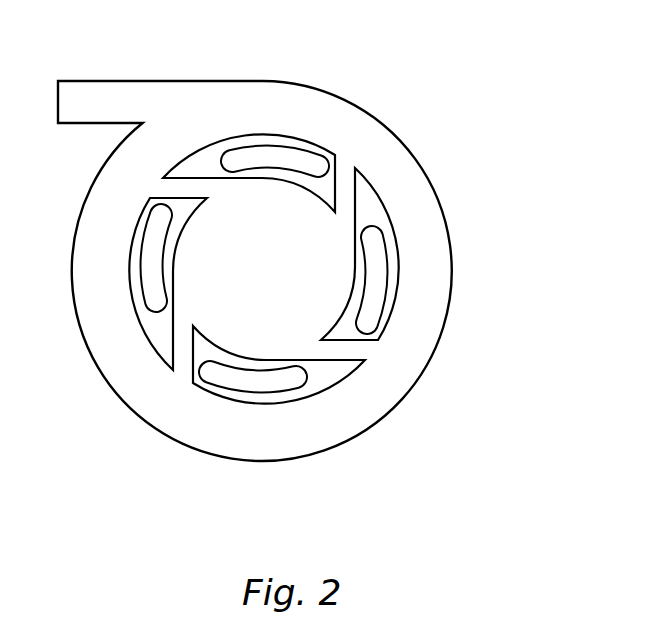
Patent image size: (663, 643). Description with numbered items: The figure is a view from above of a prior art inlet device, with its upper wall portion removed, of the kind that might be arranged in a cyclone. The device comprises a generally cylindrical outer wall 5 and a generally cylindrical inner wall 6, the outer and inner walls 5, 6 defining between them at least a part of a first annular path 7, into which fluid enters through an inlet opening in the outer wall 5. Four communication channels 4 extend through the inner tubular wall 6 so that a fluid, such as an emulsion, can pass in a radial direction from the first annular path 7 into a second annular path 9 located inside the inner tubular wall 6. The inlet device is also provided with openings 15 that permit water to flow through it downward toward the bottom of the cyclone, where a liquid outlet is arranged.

The communication channel 4 is at (349, 431).
The outer wall 5 is at (362, 438).
The inner wall 6 is at (388, 215).
The first annular path 7 is at (290, 286).
The second annular path 9 is at (323, 283).
The opening 15 is at (277, 380).